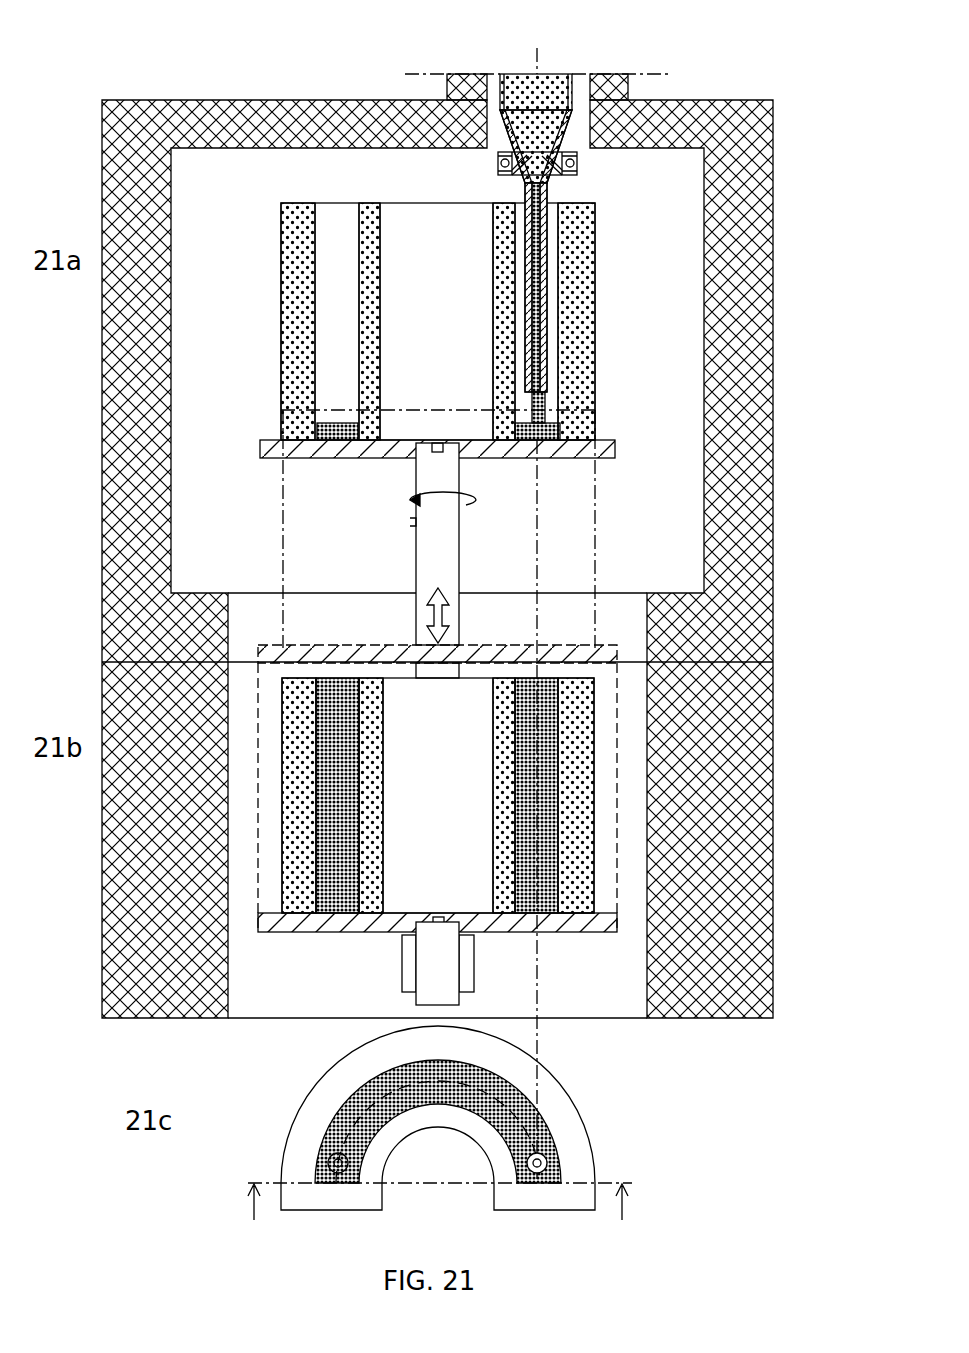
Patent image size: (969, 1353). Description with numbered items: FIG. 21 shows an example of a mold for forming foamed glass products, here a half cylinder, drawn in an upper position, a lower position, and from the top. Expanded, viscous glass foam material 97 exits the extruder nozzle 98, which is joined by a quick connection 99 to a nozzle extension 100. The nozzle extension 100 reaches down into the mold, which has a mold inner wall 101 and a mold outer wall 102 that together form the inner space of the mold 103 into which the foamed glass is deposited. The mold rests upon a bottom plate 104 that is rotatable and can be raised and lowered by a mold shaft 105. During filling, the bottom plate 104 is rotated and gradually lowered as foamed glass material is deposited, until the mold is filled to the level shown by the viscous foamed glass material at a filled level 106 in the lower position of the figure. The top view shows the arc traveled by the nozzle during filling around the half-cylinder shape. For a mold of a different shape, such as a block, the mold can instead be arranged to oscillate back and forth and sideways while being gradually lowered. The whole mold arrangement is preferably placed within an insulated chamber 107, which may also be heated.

The expanded viscous glass foam material 97 is at (537, 74).
The extruder nozzle 98 is at (567, 130).
The quick connection 99 is at (498, 160).
The nozzle extension 100 is at (545, 337).
The mold inner wall 101 is at (375, 340).
The mold outer wall 102 is at (582, 370).
The inner space of a mold 103 is at (328, 272).
The bottom plate 104 is at (262, 448).
The mold shaft 105 is at (447, 562).
The viscous foamed glass material at a filled level 106 is at (517, 685).
The insulated chamber 107 is at (750, 185).